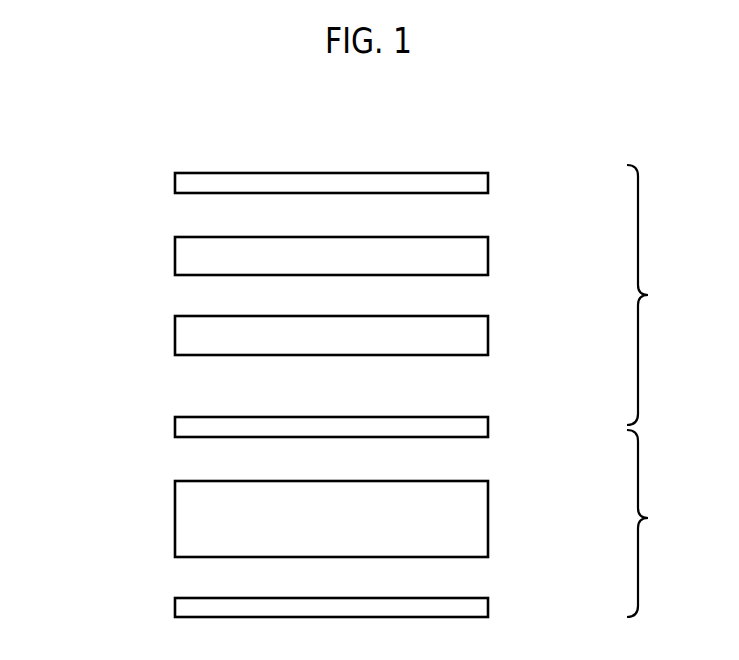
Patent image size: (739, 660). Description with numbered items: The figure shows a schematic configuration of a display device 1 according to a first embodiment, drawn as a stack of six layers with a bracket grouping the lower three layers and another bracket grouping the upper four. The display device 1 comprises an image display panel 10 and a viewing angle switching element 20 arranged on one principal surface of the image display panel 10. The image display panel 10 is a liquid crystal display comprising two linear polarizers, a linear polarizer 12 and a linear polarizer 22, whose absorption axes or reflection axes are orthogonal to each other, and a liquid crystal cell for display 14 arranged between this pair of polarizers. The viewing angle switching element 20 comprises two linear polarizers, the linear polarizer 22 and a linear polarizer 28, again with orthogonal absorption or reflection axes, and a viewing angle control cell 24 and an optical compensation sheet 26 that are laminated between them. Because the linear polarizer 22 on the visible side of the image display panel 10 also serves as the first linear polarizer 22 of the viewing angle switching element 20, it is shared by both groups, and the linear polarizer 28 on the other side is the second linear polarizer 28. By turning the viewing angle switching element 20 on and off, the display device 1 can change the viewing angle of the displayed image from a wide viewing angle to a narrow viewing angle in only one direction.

The display device 1 is at (133, 132).
The image display panel 10 is at (653, 523).
The linear polarizer 12 is at (488, 607).
The liquid crystal cell for display 14 is at (488, 518).
The viewing angle switching element 20 is at (653, 295).
The first linear polarizer 22 is at (488, 427).
The viewing angle control cell 24 is at (488, 336).
The optical compensation sheet 26 is at (488, 255).
The second linear polarizer 28 is at (488, 184).